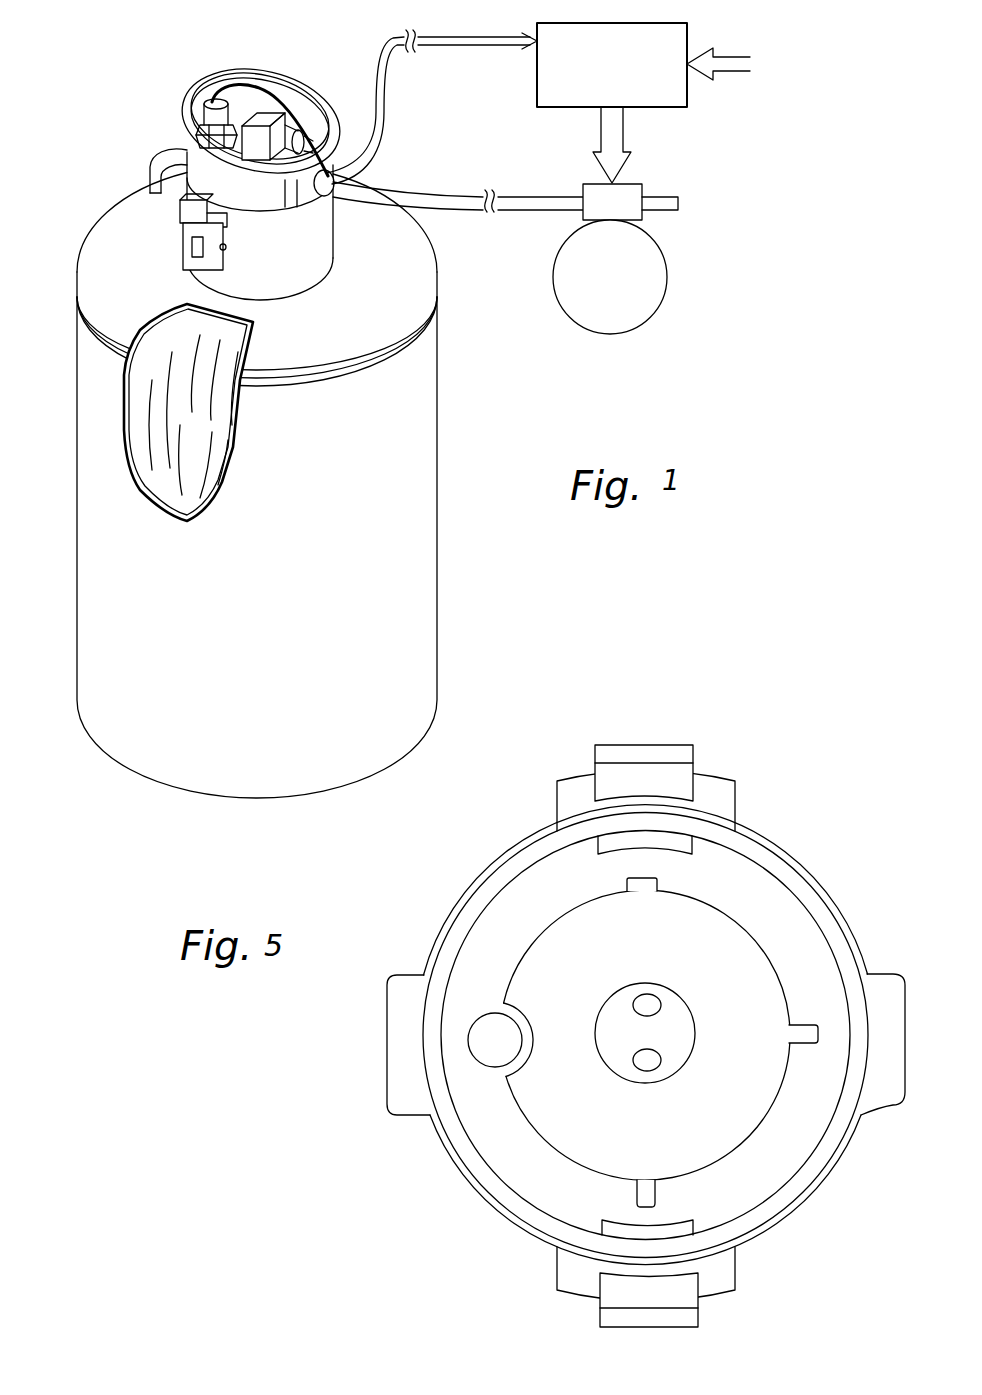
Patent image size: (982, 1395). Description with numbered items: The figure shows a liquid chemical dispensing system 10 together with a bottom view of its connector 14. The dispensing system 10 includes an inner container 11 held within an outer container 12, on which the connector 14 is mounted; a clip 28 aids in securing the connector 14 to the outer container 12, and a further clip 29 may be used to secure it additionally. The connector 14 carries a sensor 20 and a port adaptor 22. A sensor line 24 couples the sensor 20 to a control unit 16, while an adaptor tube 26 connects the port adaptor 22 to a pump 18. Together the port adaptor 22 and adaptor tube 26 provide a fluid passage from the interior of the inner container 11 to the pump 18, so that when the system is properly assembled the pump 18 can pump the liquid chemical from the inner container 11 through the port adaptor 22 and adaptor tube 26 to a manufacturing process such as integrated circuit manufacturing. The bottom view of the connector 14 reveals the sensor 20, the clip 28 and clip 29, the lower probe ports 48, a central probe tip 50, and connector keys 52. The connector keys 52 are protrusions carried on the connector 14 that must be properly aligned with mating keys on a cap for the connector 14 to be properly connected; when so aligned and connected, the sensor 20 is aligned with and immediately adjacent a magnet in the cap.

In FIG. 1, the liquid chemical dispensing system 10 is at (147, 76).
In FIG. 1, the inner container 11 is at (200, 473).
In FIG. 1, the outer container 12 is at (437, 375).
In FIG. 1, the connector 14 is at (180, 113).
In FIG. 5, the connector 14 is at (807, 866).
In FIG. 1, the control unit 16 is at (583, 22).
In FIG. 1, the pump 18 is at (667, 282).
In FIG. 1, the sensor 20 is at (204, 92).
In FIG. 5, the sensor 20 is at (487, 1025).
In FIG. 1, the port adaptor 22 is at (262, 125).
In FIG. 1, the sensor line 24 is at (478, 33).
In FIG. 1, the adaptor tube 26 is at (548, 195).
In FIG. 1, the clip 28 is at (176, 228).
In FIG. 5, the clip 28 is at (653, 744).
In FIG. 5, the clip 29 is at (680, 1328).
In FIG. 5, the lower probe ports 48 is at (647, 1003).
In FIG. 5, the probe tip 50 is at (670, 1030).
In FIG. 5, the connector keys 52 is at (650, 878).